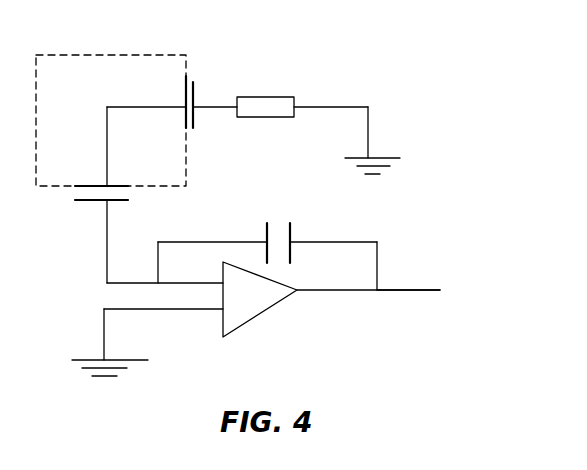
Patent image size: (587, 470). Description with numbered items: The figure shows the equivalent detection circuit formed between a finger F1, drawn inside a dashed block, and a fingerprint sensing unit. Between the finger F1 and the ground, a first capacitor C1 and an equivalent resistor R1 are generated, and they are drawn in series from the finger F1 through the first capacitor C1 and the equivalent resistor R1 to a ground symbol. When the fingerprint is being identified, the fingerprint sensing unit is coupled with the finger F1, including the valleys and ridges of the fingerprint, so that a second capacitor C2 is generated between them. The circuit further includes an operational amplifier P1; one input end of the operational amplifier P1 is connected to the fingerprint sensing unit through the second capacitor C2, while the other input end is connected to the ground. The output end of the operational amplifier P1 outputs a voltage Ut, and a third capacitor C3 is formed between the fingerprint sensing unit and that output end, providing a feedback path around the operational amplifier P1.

The finger F1 is at (132, 55).
The first capacitor C1 is at (172, 100).
The equivalent resistor R1 is at (318, 121).
The second capacitor C2 is at (149, 195).
The third capacitor C3 is at (267, 251).
The operational amplifier P1 is at (256, 319).
The output voltage Ut is at (432, 290).